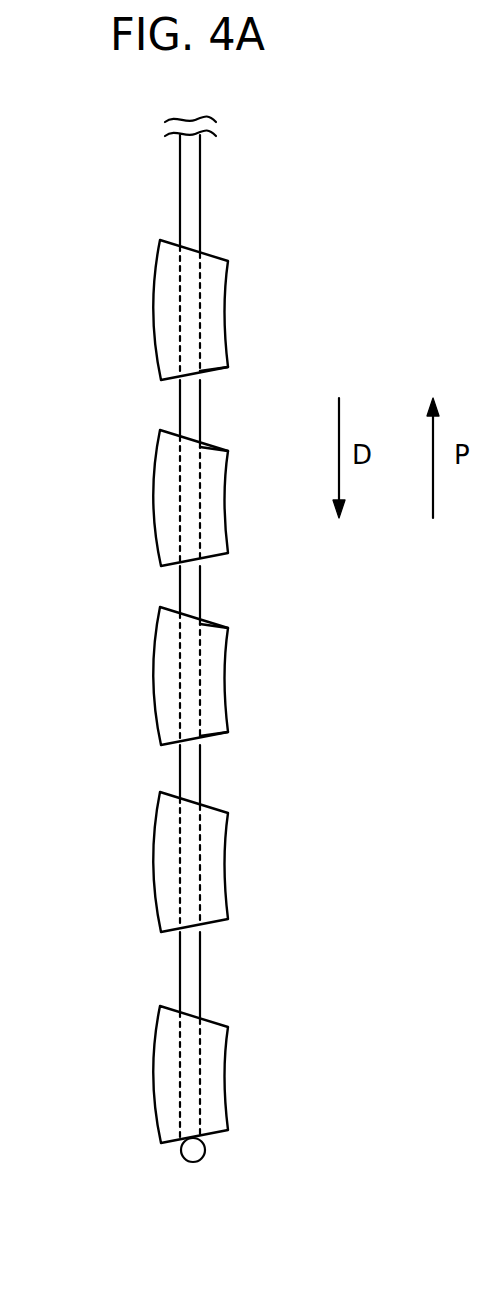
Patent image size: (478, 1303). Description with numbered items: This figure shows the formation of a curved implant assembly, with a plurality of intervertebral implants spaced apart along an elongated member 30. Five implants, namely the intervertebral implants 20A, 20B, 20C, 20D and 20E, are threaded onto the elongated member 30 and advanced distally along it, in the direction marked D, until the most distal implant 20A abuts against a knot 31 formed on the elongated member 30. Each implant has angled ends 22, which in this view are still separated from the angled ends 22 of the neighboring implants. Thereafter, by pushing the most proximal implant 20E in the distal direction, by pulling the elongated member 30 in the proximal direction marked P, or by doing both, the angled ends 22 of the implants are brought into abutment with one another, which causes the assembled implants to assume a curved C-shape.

The intervertebral implant 20A is at (162, 1082).
The intervertebral implant 20B is at (163, 865).
The intervertebral implant 20C is at (162, 672).
The intervertebral implant 20D is at (162, 499).
The intervertebral implant 20E is at (162, 303).
The angled end 22 is at (208, 369).
The elongated member 30 is at (190, 770).
The knot 31 is at (205, 1148).